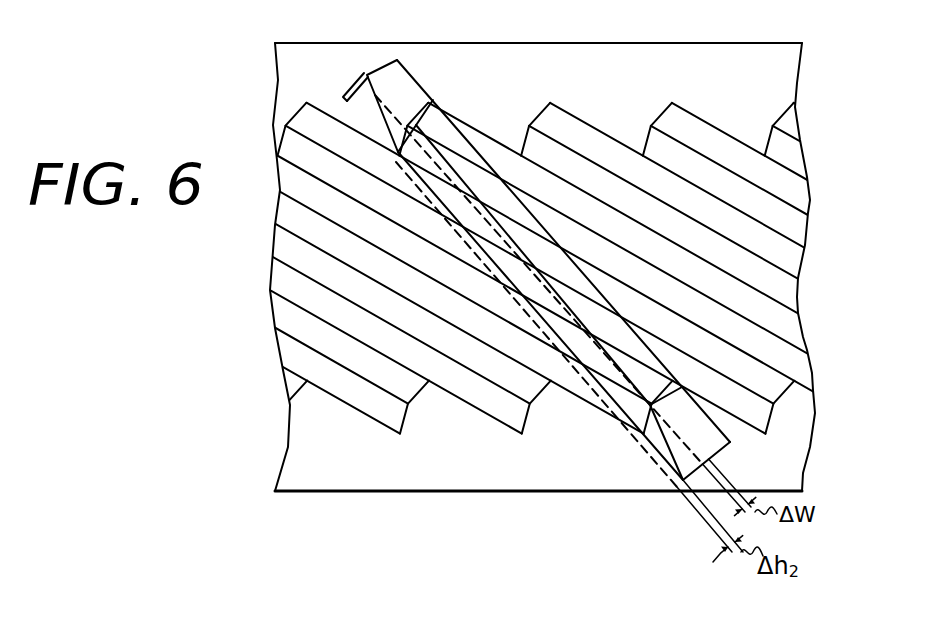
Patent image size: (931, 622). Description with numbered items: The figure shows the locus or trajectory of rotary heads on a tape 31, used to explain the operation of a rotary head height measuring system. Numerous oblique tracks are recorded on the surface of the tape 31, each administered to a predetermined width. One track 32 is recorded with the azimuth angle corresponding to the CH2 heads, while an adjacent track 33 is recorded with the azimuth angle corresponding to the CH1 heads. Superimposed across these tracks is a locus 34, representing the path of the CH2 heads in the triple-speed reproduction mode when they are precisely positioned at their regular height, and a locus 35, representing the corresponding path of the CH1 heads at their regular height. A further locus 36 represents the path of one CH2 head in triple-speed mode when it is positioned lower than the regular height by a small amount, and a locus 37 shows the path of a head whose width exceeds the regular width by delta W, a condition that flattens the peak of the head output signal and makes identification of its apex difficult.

The tape 31 is at (746, 43).
The track 32 is at (520, 147).
The track 33 is at (547, 108).
The locus of CH2 heads 34 is at (343, 98).
The locus of CH1 heads 35 is at (386, 62).
The locus of rotary head 36 is at (352, 112).
The locus 37 is at (362, 68).